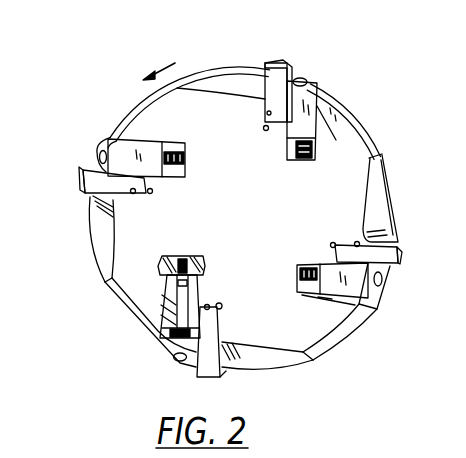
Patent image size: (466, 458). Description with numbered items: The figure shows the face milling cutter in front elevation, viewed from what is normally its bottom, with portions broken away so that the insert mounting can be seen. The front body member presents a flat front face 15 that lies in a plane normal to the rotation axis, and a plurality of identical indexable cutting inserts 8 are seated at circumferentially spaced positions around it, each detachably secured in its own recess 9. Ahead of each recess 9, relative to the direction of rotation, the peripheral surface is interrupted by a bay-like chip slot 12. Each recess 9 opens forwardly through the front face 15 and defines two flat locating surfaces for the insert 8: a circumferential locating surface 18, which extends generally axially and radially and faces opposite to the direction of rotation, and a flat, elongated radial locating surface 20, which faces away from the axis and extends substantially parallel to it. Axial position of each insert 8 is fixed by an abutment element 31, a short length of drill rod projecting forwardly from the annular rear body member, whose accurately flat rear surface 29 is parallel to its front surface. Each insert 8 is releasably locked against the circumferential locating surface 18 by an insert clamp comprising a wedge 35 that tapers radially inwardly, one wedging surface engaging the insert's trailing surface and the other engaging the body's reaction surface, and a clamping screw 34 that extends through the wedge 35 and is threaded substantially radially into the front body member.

The indexable cutting insert 8 is at (82, 172).
The recess 9 is at (183, 168).
The chip slot 12 is at (220, 79).
The front face 15 is at (260, 202).
The circumferential locating surface 18 is at (134, 194).
The radial locating surface 20 is at (150, 190).
The rear surface 29 is at (398, 202).
The abutment element 31 is at (100, 138).
The clamping screw 34 is at (358, 129).
The wedge 35 is at (97, 156).